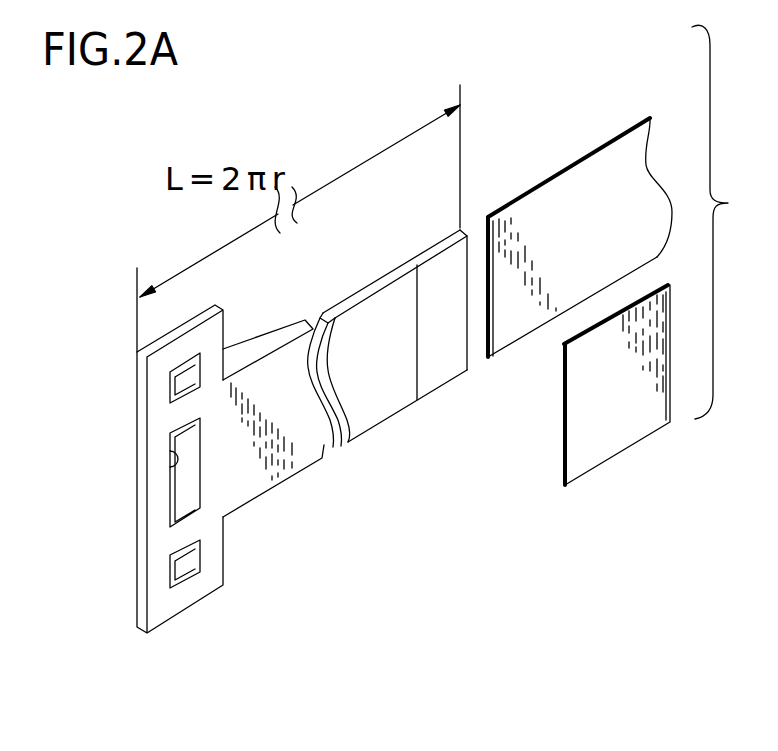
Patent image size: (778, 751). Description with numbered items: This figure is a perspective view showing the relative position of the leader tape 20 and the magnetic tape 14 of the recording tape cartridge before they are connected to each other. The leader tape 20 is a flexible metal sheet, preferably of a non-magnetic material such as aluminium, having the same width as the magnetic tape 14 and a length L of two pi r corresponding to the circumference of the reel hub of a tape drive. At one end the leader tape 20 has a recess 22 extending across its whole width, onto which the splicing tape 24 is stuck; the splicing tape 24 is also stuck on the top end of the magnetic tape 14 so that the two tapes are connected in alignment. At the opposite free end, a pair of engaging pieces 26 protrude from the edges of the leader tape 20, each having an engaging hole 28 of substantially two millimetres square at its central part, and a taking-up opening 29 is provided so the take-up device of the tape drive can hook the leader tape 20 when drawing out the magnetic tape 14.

The magnetic tape 14 is at (573, 207).
The leader tape 20 is at (298, 458).
The recess 22 is at (438, 368).
The splicing tape 24 is at (622, 438).
The engaging pieces 26 is at (216, 352).
The engaging hole 28 is at (170, 391).
The taking-up opening 29 is at (178, 466).